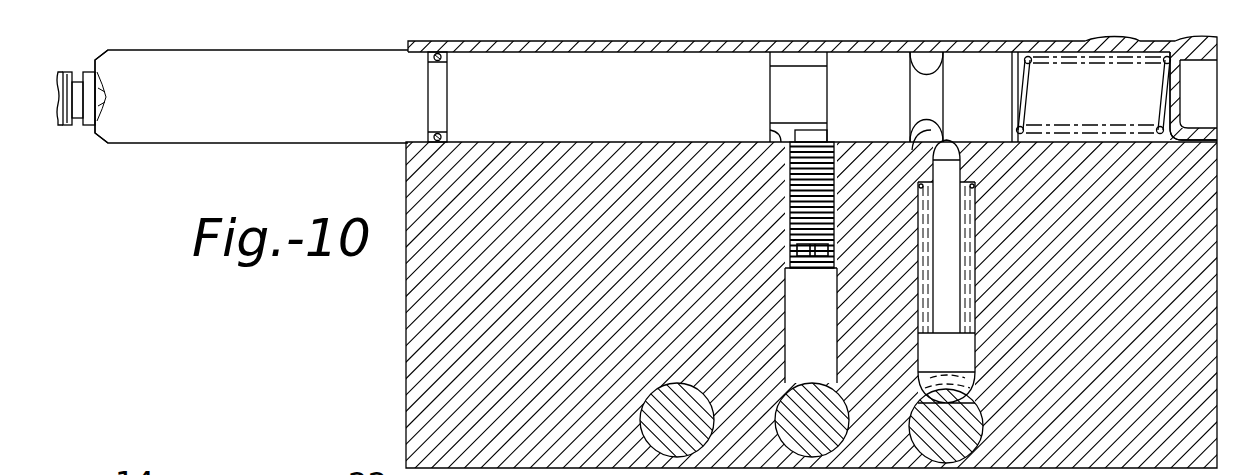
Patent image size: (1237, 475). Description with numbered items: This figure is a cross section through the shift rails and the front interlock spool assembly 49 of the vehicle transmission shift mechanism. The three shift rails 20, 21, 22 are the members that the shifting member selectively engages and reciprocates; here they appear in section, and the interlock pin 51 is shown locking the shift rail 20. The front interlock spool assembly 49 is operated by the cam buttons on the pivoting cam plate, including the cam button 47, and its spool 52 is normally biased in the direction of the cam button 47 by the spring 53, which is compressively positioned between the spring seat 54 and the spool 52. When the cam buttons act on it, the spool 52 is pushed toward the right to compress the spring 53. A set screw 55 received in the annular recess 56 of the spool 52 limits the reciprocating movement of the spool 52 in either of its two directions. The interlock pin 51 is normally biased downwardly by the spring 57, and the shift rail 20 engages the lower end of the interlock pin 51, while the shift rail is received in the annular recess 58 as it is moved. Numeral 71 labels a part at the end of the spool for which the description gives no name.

The shift rail 20 is at (980, 431).
The shift rail 21 is at (845, 428).
The shift rail 22 is at (714, 421).
The cam button 47 is at (110, 87).
The front interlock spool assembly 49 is at (376, 150).
The interlock pin 51 is at (948, 270).
The spool 52 is at (590, 142).
The spring 53 is at (1021, 135).
The spring seat 54 is at (1196, 143).
The set screw 55 is at (800, 204).
The annular recess 56 is at (776, 144).
The spring 57 is at (972, 187).
The annular recess 58 is at (912, 145).
The fastener 71 is at (88, 123).